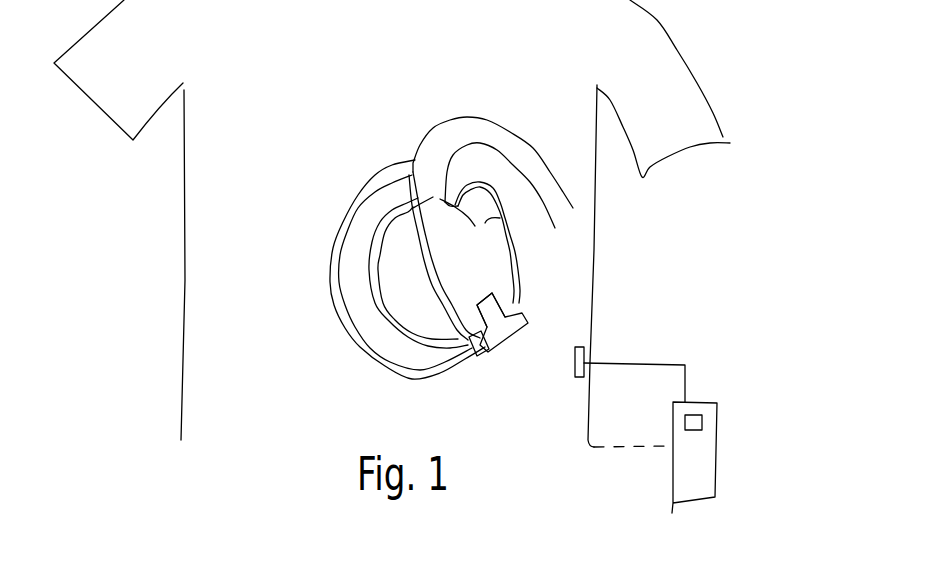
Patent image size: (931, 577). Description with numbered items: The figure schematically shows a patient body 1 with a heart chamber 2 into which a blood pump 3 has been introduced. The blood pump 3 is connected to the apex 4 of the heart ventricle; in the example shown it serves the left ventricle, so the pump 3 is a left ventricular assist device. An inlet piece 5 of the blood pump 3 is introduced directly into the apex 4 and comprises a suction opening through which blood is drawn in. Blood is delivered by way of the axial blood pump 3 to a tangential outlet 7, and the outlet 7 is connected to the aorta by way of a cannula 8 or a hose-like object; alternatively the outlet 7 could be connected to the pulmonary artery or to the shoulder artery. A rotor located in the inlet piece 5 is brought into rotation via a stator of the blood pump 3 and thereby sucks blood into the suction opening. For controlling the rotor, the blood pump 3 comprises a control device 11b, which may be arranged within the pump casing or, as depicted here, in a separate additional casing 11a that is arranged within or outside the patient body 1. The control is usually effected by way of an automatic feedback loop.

The patient body 1 is at (737, 68).
The heart chamber 2 is at (486, 262).
The blood pump 3 is at (511, 368).
The apex 4 is at (522, 305).
The inlet piece 5 is at (482, 303).
The tangential outlet 7 is at (481, 378).
The cannula 8 is at (346, 351).
The separate additional casing 11a is at (708, 445).
The control device 11b is at (718, 413).